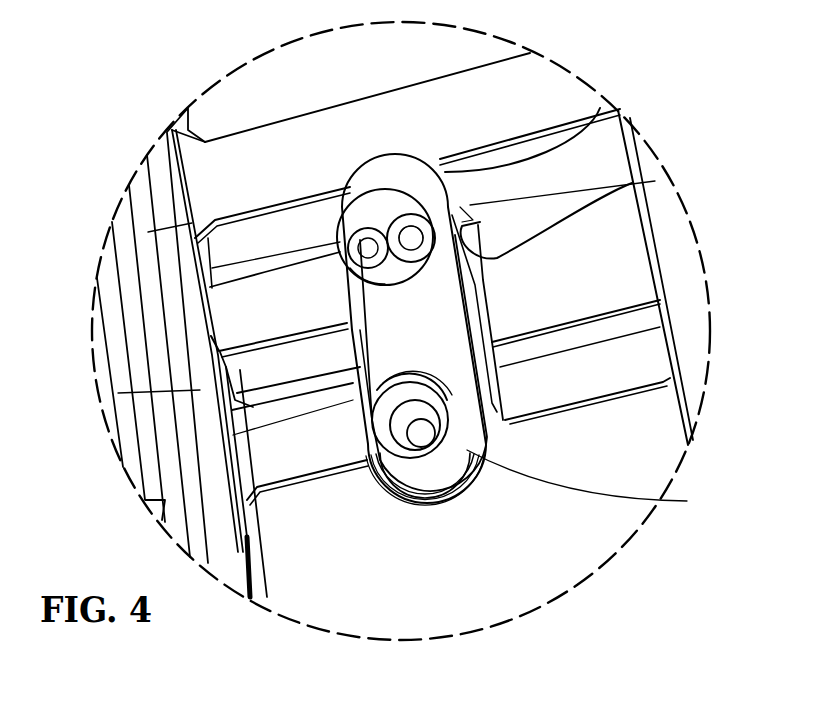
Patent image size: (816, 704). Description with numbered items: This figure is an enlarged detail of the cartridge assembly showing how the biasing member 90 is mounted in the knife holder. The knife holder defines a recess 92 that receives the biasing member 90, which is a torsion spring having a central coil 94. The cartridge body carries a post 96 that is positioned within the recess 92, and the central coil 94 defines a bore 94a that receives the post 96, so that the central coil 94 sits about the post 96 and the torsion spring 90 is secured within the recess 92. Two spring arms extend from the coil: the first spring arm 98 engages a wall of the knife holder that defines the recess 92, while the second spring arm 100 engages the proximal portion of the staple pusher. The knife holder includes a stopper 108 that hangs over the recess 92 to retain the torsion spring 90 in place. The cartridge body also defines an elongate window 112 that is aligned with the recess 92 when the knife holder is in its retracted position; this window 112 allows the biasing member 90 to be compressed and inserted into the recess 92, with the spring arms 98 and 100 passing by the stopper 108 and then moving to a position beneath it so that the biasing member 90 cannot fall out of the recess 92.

The biasing member 90 is at (433, 330).
The recess 92 is at (600, 108).
The central coil 94 is at (398, 445).
The bore 94a is at (398, 452).
The post 96 is at (462, 432).
The first spring arm 98 is at (237, 393).
The second spring arm 100 is at (412, 298).
The stopper 108 is at (352, 326).
The elongate window 112 is at (640, 182).